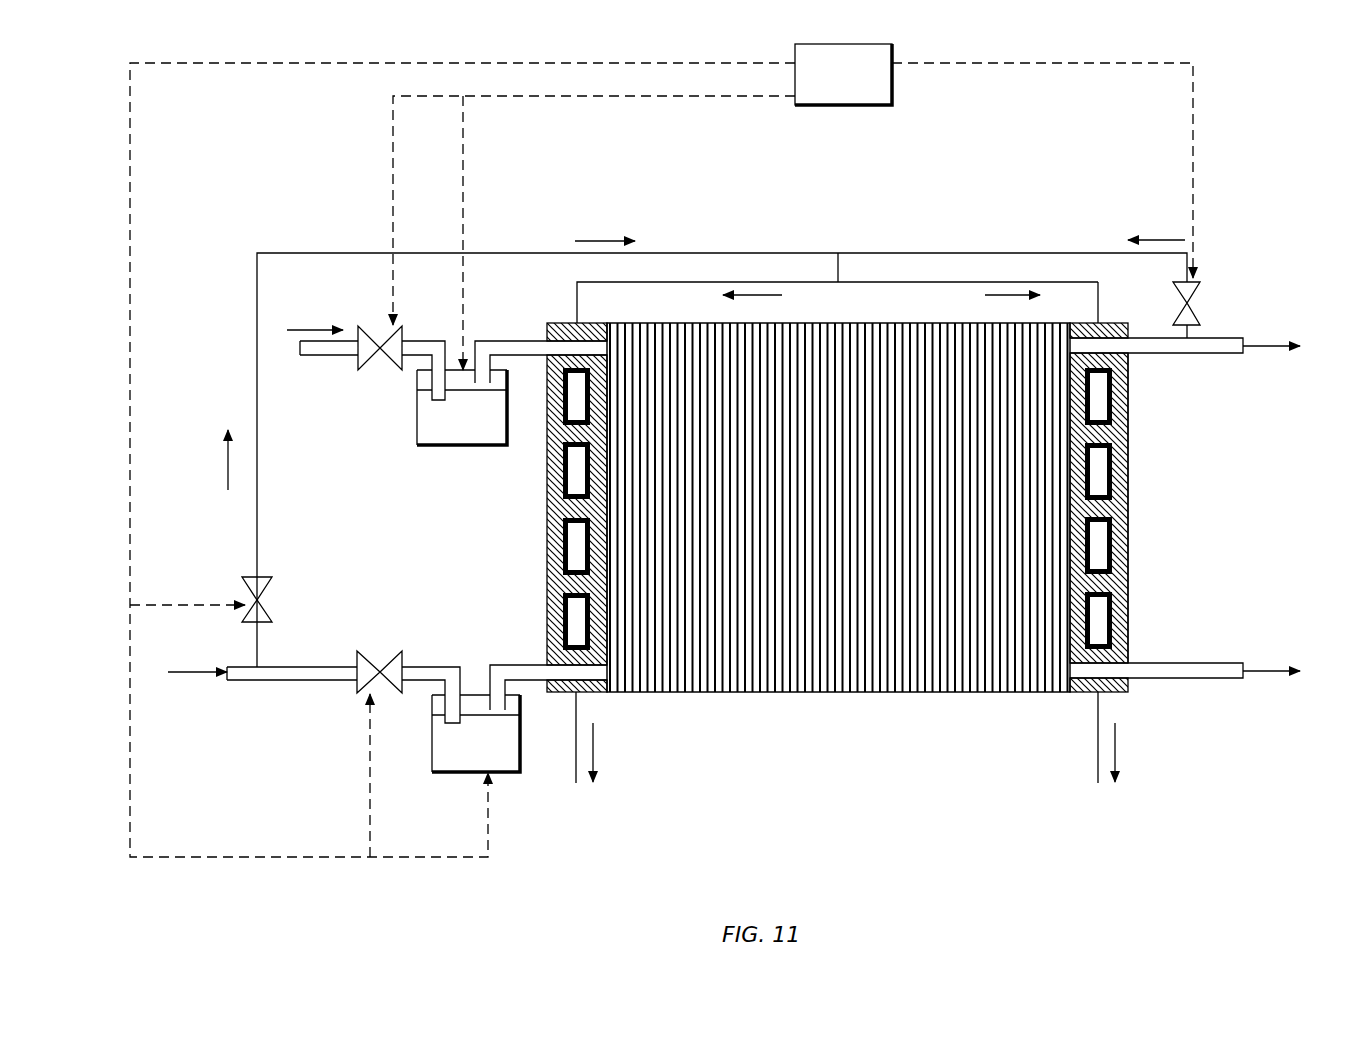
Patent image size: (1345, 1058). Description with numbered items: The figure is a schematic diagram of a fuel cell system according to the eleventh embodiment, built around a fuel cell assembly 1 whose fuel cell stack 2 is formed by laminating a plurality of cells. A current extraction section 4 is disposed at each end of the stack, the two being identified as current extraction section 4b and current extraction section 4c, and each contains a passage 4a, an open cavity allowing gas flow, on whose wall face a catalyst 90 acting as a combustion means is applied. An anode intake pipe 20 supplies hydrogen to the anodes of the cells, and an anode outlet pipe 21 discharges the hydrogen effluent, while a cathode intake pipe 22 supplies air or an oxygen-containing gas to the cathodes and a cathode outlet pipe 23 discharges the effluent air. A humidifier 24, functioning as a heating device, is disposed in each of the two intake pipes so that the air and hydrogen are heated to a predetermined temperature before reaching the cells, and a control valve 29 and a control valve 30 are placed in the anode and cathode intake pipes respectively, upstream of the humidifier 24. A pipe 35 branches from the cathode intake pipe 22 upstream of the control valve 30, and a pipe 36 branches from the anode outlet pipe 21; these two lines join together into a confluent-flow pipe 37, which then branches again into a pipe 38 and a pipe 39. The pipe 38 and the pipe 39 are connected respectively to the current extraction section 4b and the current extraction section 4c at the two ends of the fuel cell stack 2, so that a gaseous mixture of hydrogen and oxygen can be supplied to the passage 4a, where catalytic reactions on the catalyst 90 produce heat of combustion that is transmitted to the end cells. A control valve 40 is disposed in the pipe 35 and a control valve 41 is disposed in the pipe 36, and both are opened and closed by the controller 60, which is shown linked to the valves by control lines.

The fuel cell assembly 1 is at (692, 321).
The fuel cell stack 2 is at (882, 325).
The current extraction section 4 is at (1131, 547).
The passage 4a is at (577, 557).
The current extraction section 4b is at (547, 488).
The current extraction section 4c is at (1128, 412).
The anode intake pipe 20 is at (313, 356).
The anode outlet pipe 21 is at (1227, 338).
The cathode intake pipe 22 is at (312, 680).
The cathode outlet pipe 23 is at (1185, 663).
The humidifier 24 is at (417, 418).
The control valve 29 is at (362, 367).
The control valve 30 is at (370, 683).
The pipe 35 is at (283, 253).
The pipe 36 is at (967, 253).
The confluent-flow pipe 37 is at (840, 262).
The pipe 38 is at (752, 280).
The pipe 39 is at (1057, 282).
The control valve 40 is at (270, 583).
The control valve 41 is at (1202, 292).
The controller 60 is at (661, 450).
The catalyst 90 is at (562, 422).